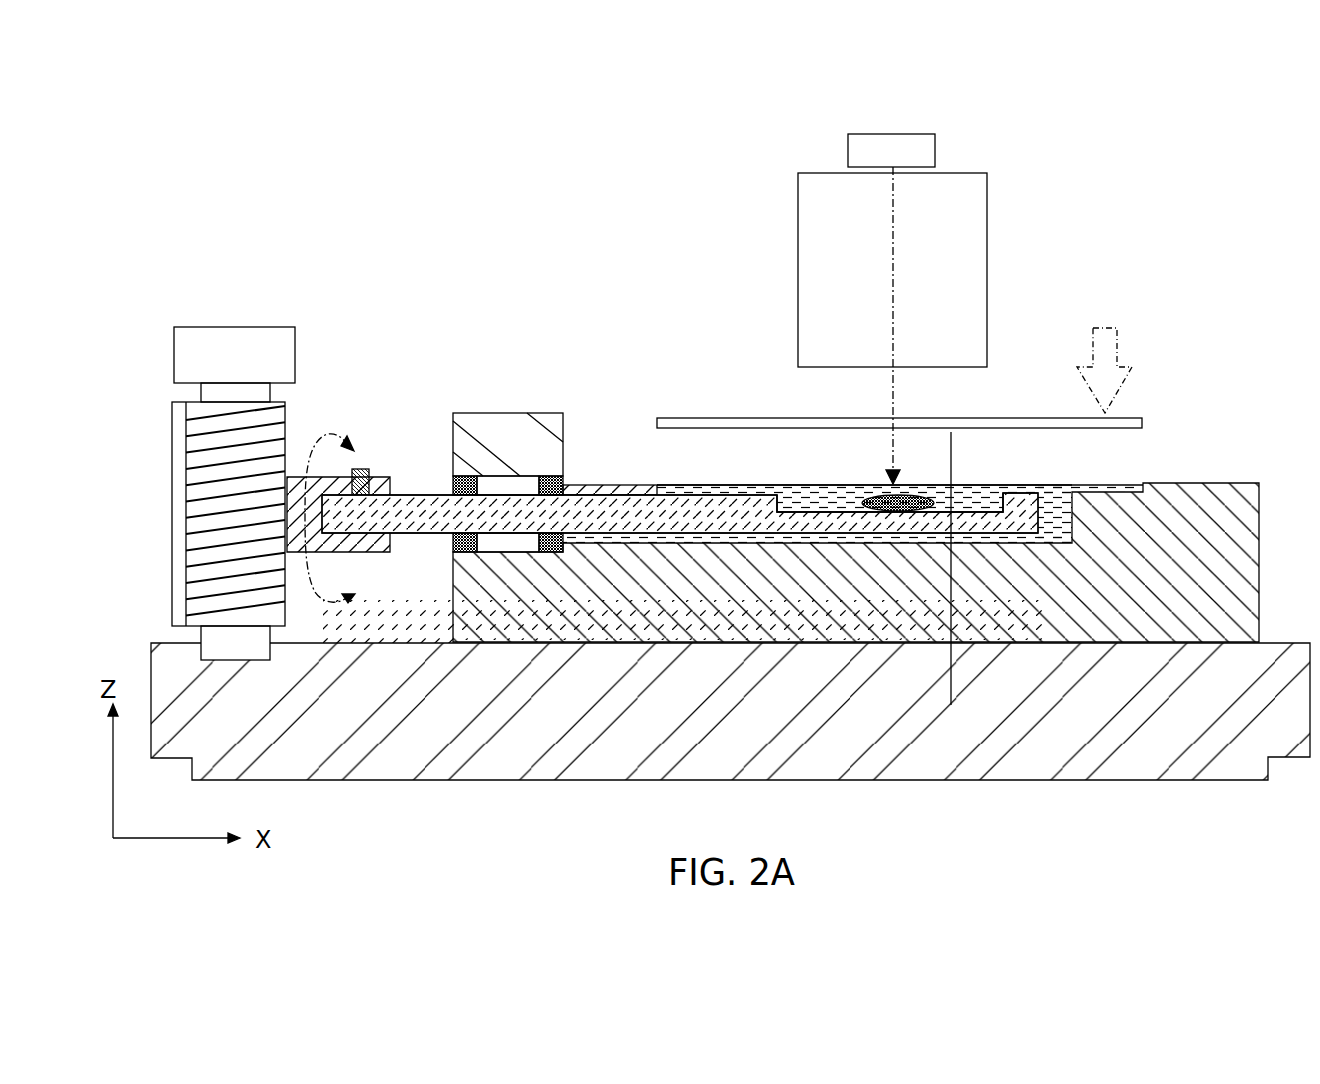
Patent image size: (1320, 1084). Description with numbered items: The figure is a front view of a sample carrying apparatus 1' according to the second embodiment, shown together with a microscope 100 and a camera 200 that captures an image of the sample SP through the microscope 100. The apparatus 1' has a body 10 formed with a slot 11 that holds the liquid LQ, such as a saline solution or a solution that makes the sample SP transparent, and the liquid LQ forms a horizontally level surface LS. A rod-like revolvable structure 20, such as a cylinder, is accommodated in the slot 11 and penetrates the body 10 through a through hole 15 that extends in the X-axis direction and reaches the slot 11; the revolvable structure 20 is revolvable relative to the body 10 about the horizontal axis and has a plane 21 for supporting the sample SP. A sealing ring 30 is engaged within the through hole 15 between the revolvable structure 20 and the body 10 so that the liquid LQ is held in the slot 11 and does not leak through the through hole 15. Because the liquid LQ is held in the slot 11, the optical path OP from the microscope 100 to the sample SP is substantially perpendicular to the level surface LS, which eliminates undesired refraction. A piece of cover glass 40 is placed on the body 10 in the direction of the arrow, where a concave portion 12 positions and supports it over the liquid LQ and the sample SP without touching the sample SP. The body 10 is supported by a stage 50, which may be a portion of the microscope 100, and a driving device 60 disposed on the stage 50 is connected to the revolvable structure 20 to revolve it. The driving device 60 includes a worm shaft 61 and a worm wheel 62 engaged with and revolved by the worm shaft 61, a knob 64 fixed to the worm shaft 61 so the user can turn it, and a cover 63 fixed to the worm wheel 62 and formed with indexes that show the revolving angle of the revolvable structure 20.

The sample carrying apparatus 1' is at (1139, 297).
The body 10 is at (1240, 560).
The slot 11 is at (1055, 512).
The concave portion 12 is at (1133, 490).
The through hole 15 is at (527, 485).
The revolvable structure 20 is at (427, 495).
The plane 21 is at (981, 512).
The sealing ring 30 is at (563, 487).
The cover glass 40 is at (697, 420).
The stage 50 is at (1287, 745).
The driving device 60 is at (129, 328).
The worm shaft 61 is at (201, 396).
The worm wheel 62 is at (192, 462).
The cover 63 is at (175, 507).
The knob 64 is at (178, 352).
The microscope 100 is at (987, 240).
The camera 200 is at (848, 152).
The optical path OP is at (893, 402).
The horizontally level surface LS is at (760, 487).
The liquid LQ is at (808, 487).
The sample SP is at (922, 502).